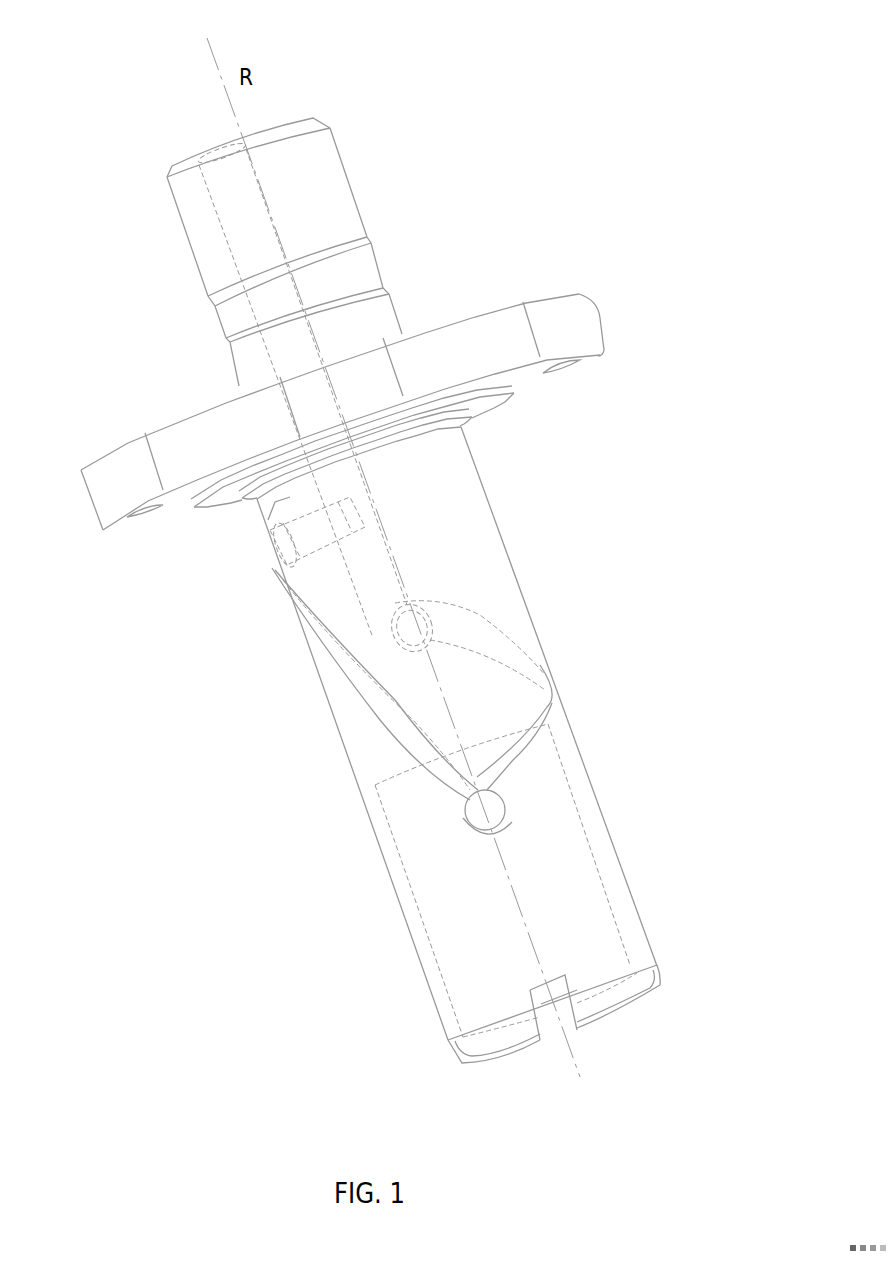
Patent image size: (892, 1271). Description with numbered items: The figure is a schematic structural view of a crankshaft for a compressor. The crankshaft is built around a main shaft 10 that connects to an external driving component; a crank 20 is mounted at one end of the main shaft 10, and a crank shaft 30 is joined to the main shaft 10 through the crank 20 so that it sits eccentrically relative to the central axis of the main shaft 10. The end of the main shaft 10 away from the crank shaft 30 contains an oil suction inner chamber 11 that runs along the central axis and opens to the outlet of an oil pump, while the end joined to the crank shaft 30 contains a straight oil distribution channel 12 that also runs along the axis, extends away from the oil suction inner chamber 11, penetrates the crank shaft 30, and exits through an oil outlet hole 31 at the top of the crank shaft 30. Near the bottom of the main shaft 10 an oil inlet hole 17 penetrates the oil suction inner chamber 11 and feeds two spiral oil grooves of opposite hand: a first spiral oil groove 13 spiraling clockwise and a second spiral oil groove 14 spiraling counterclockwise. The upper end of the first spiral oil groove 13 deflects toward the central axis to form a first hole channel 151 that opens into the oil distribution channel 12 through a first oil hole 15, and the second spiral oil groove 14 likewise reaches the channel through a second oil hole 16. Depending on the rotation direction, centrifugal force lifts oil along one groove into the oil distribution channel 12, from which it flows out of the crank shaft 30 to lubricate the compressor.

The main shaft 10 is at (482, 560).
The oil suction inner chamber 11 is at (587, 878).
The oil distribution channel 12 is at (280, 377).
The first spiral oil groove 13 is at (334, 681).
The second spiral oil groove 14 is at (558, 702).
The first oil hole 15 is at (326, 514).
The first hole channel 151 is at (298, 550).
The second oil hole 16 is at (443, 614).
The oil inlet hole 17 is at (460, 813).
The crank 20 is at (490, 333).
The crank shaft 30 is at (342, 207).
The oil outlet hole 31 is at (210, 148).